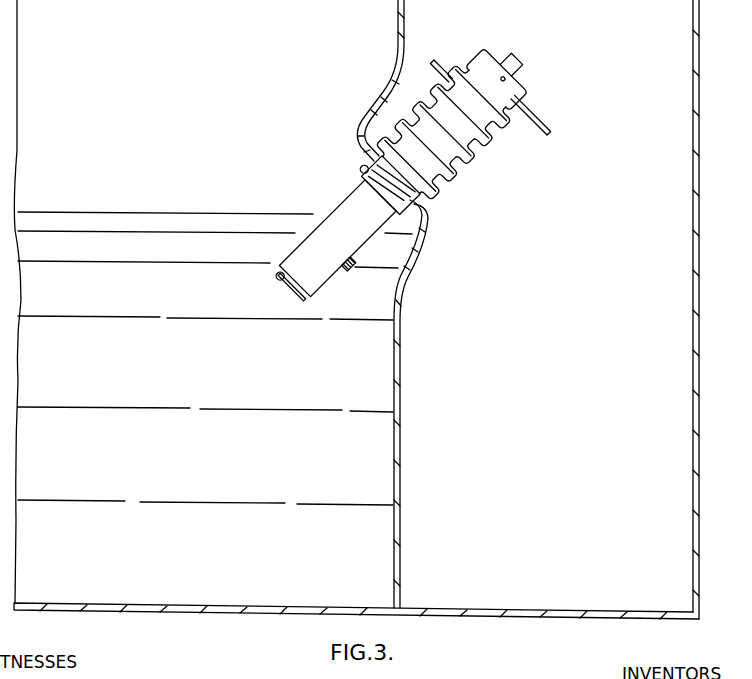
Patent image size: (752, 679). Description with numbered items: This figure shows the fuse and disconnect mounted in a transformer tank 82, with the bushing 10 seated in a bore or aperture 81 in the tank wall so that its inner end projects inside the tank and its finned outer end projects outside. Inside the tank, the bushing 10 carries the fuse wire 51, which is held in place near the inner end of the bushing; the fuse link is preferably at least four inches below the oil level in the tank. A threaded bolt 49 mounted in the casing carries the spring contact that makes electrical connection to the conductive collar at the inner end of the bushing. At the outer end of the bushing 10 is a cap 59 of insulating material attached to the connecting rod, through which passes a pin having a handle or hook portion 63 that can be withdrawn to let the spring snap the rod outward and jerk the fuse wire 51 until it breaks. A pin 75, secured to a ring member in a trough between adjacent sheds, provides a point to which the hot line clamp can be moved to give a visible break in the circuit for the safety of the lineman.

The bushing 10 is at (468, 164).
The threaded bolt 49 is at (349, 274).
The fuse wire 51 is at (283, 279).
The cap 59 is at (487, 58).
The handle or hook portion 63 is at (553, 128).
The pin 75 is at (433, 62).
The bore or aperture 81 is at (362, 172).
The transformer tank 82 is at (402, 352).